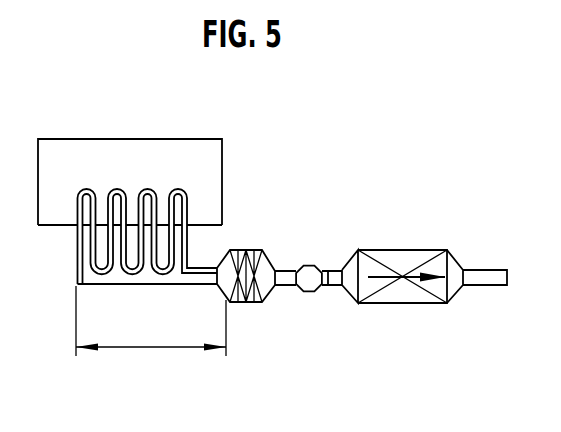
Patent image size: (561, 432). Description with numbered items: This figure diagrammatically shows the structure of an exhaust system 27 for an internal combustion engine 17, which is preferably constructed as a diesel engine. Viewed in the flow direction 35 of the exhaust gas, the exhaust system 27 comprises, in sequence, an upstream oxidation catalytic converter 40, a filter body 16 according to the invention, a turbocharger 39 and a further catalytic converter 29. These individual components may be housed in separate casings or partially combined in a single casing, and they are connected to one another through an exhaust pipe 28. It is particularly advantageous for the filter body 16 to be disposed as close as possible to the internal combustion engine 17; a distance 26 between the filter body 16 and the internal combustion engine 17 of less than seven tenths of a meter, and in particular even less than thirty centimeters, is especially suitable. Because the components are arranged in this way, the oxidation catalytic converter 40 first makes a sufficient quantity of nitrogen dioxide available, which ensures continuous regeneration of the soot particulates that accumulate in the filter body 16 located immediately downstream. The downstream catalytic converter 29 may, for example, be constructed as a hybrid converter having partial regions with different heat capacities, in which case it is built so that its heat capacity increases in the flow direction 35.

The internal combustion engine 17 is at (72, 153).
The distance 26 is at (143, 345).
The oxidation catalytic converter 40 is at (235, 252).
The filter body 16 is at (260, 267).
The turbocharger 39 is at (304, 283).
The exhaust pipe 28 is at (329, 286).
The exhaust system 27 is at (424, 257).
The flow direction 35 is at (382, 276).
The further catalytic converter 29 is at (402, 290).